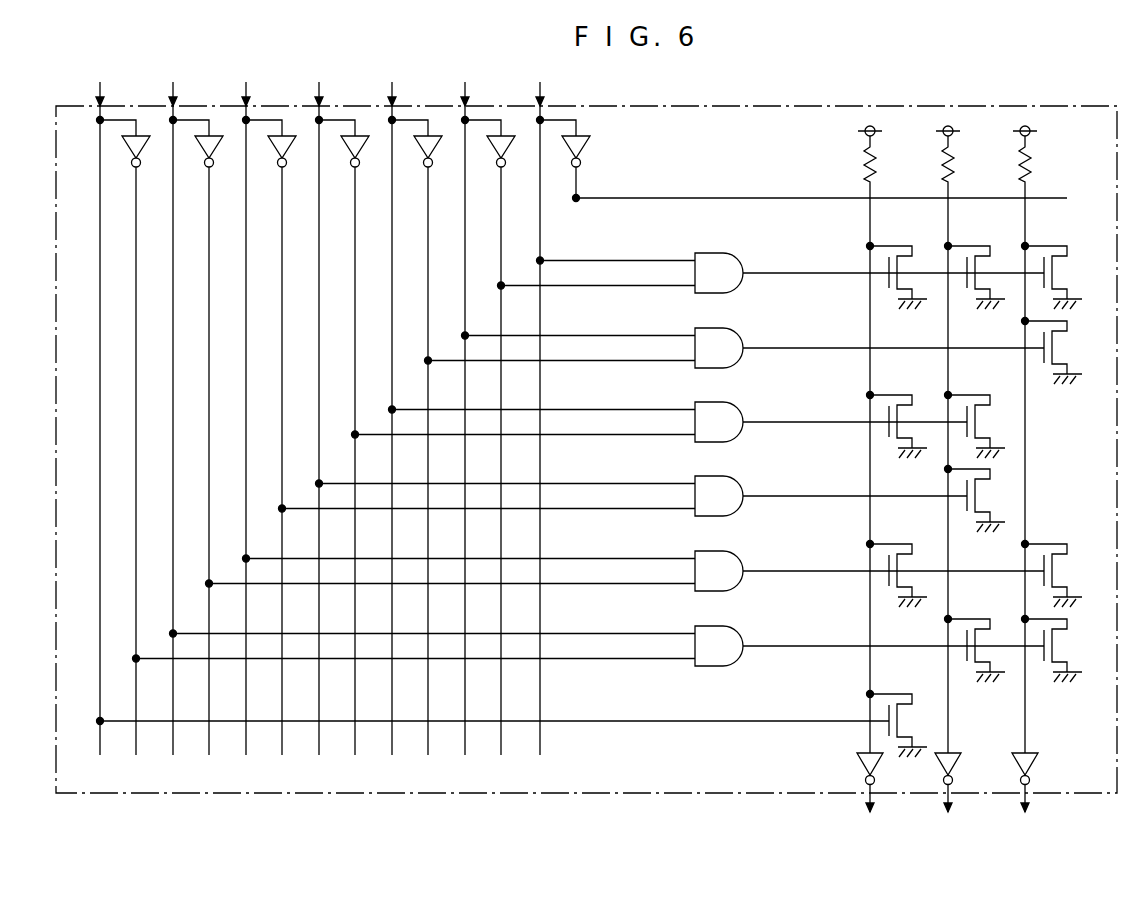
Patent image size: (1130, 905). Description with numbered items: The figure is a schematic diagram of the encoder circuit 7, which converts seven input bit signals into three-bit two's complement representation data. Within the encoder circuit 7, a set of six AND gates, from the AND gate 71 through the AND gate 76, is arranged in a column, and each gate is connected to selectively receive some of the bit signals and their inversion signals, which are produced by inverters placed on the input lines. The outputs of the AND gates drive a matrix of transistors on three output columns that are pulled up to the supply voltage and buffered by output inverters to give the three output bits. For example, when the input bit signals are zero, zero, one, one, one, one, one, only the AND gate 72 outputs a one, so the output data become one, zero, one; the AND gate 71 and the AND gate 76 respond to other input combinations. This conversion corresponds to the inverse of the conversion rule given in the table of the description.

The encoder circuit 7 is at (1015, 106).
The AND gate 71 is at (727, 657).
The AND gate 72 is at (727, 583).
The AND gate 76 is at (721, 258).